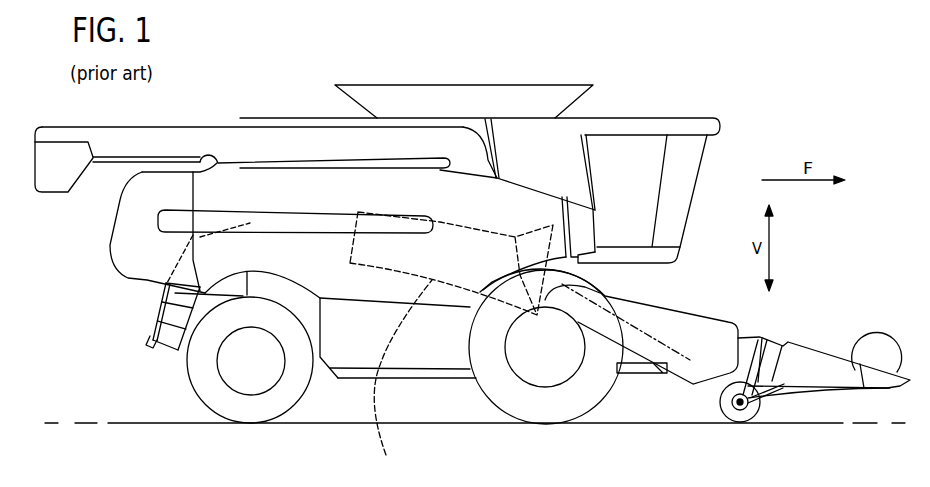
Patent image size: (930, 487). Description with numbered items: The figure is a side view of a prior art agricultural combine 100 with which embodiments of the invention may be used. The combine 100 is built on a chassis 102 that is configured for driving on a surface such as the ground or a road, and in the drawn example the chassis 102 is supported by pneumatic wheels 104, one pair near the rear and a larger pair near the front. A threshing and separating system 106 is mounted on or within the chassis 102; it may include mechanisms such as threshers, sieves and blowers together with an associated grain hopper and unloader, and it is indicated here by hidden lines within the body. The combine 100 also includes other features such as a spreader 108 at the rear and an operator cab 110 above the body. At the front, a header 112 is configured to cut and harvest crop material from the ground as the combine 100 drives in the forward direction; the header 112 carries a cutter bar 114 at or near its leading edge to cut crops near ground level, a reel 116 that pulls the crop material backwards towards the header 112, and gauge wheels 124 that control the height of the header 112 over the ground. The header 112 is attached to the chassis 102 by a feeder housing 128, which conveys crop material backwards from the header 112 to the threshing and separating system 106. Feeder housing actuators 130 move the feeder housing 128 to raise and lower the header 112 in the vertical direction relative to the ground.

The agricultural combine 100 is at (760, 101).
The chassis 102 is at (337, 345).
The pneumatic wheels 104 is at (513, 390).
The threshing and separating system 106 is at (403, 379).
The spreader 108 is at (160, 337).
The operator cab 110 is at (643, 150).
The header 112 is at (813, 372).
The cutter bar 114 is at (862, 389).
The reel 116 is at (872, 343).
The gauge wheels 124 is at (720, 404).
The feeder housing 128 is at (690, 357).
The feeder housing actuators 130 is at (655, 378).